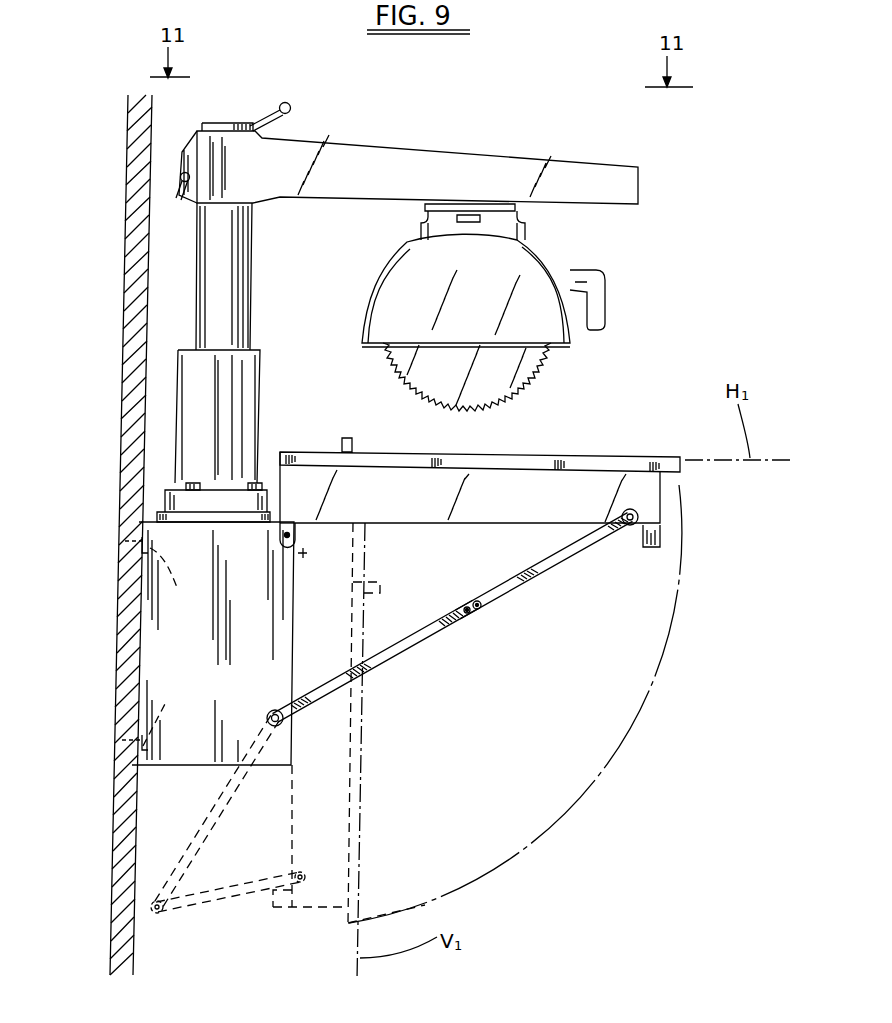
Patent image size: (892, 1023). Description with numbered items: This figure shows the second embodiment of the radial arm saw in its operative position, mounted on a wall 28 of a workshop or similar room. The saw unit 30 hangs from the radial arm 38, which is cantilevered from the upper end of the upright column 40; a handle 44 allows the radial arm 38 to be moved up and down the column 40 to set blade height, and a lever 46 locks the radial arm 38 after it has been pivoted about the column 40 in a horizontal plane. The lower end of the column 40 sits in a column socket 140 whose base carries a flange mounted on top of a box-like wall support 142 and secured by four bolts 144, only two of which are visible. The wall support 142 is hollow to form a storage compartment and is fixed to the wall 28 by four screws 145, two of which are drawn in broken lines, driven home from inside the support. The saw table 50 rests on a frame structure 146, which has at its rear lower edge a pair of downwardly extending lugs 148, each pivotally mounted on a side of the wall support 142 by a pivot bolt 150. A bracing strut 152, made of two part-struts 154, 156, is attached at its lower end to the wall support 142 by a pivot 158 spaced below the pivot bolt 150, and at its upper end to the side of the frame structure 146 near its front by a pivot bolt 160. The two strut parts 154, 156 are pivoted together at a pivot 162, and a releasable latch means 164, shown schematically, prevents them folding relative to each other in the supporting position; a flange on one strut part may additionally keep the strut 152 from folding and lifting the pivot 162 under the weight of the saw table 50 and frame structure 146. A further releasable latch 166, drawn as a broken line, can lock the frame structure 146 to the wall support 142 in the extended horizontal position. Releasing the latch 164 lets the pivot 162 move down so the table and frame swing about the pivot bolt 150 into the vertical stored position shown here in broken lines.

The wall 28 is at (132, 303).
The radial arm 38 is at (574, 173).
The handle 44 is at (292, 126).
The lever 46 is at (178, 202).
The column 40 is at (253, 277).
The column socket 140 is at (262, 388).
The bolts 144 is at (257, 478).
The box-like wall support 142 is at (258, 627).
The screws 145 is at (162, 643).
The pivot bolt 150 is at (283, 548).
The lugs 148 is at (288, 526).
The releasable latch 166 is at (308, 537).
The saw table 50 is at (593, 455).
The frame structure 146 is at (413, 500).
The pivot bolt 160 is at (633, 528).
The bracing strut 152 is at (430, 690).
The strut part 154 is at (382, 660).
The strut part 156 is at (550, 563).
The pivot 158 is at (270, 714).
The pivot 162 is at (477, 600).
The releasable latch means 164 is at (466, 622).
The saw unit 30 is at (537, 268).